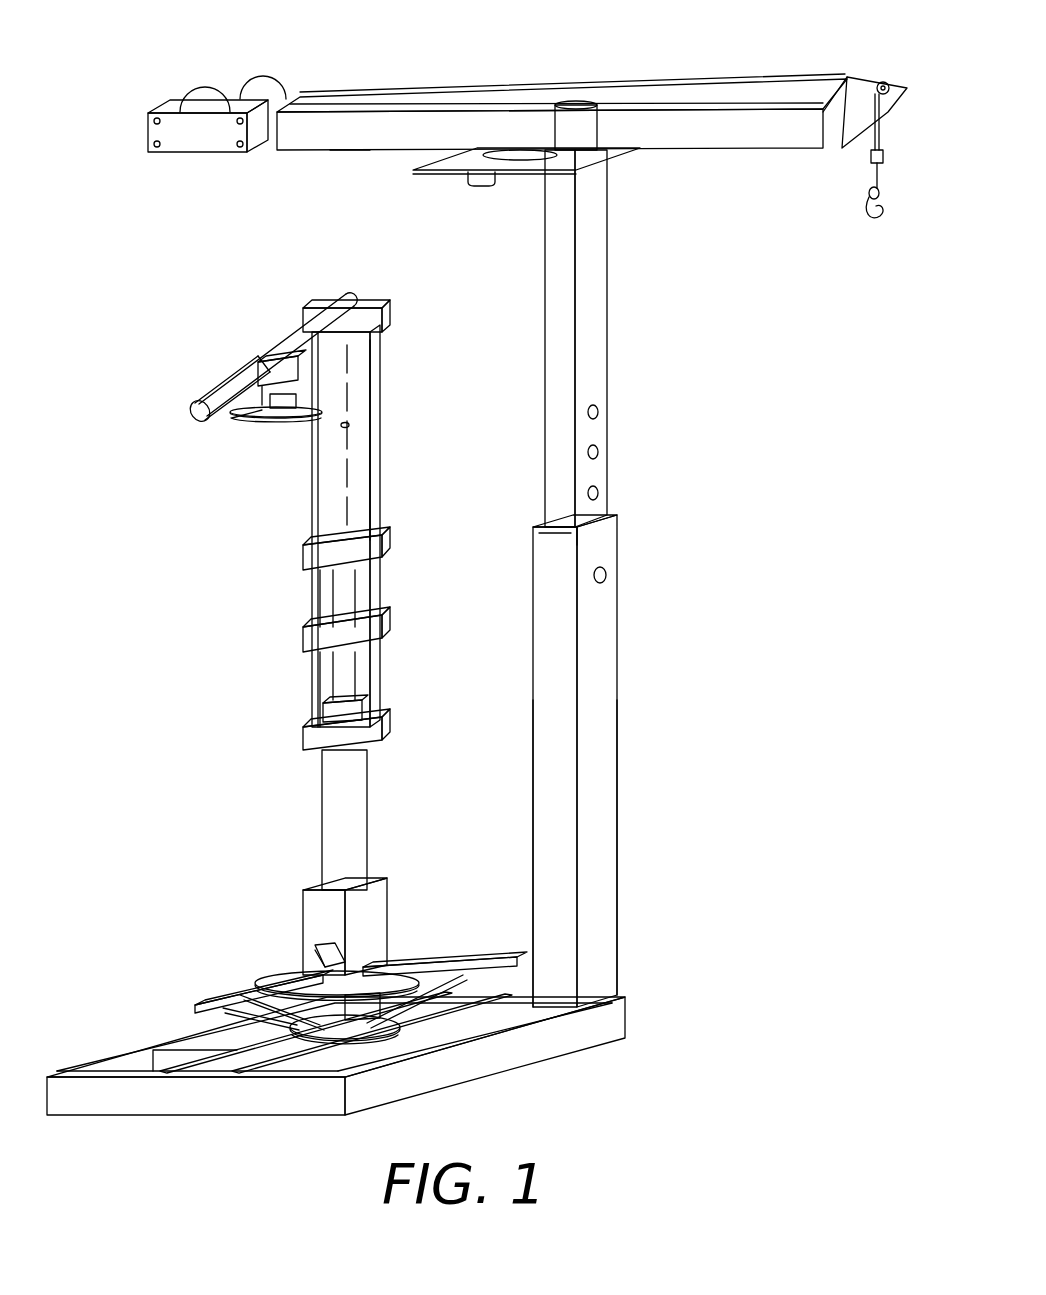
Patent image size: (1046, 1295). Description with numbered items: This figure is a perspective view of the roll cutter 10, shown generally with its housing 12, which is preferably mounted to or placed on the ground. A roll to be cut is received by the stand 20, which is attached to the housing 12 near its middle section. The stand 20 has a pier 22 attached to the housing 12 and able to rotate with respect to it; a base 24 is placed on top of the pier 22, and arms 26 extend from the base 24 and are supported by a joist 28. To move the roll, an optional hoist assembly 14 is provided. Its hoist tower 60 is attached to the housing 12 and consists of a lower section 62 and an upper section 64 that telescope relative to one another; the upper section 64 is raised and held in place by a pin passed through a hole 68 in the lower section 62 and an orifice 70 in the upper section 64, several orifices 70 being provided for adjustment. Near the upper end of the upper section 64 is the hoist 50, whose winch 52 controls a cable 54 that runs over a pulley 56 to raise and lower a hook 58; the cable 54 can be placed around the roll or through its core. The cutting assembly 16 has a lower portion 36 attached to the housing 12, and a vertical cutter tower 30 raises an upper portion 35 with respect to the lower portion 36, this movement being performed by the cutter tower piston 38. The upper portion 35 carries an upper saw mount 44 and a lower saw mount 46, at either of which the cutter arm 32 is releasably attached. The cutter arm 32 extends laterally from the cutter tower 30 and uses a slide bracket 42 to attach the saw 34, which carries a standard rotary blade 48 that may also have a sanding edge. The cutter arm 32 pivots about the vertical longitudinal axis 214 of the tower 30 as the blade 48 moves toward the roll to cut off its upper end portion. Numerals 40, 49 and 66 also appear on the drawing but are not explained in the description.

The roll cutter 10 is at (769, 582).
The housing 12 is at (630, 1016).
The hoist assembly 14 is at (620, 677).
The cutting assembly 16 is at (382, 460).
The stand 20 is at (405, 958).
The pier 22 is at (372, 1012).
The base 24 is at (285, 975).
The arms 26 is at (470, 960).
The joist 28 is at (450, 990).
The cutter tower 30 is at (368, 805).
The cutter arm 32 is at (290, 335).
The saw 34 is at (258, 430).
The upper portion 35 is at (380, 372).
The lower portion 36 is at (388, 893).
The cutter tower piston 38 is at (360, 695).
The cap 40 is at (366, 308).
The slide bracket 42 is at (240, 380).
The upper saw mount 44 is at (353, 297).
The lower saw mount 46 is at (387, 610).
The blade 48 is at (283, 420).
The pivot 49 is at (240, 422).
The hoist 50 is at (730, 150).
The winch 52 is at (240, 80).
The cable 54 is at (645, 88).
The pulley 56 is at (885, 84).
The hook 58 is at (883, 206).
The hoist tower 60 is at (620, 748).
The lower section 62 is at (620, 808).
The upper section 64 is at (612, 343).
The hole 66 is at (607, 575).
The hole 68 is at (604, 568).
The orifice 70 is at (601, 411).
The vertical longitudinal axis 214 is at (350, 425).